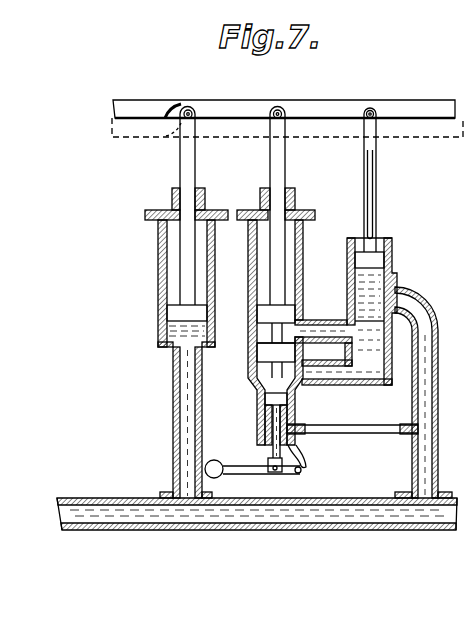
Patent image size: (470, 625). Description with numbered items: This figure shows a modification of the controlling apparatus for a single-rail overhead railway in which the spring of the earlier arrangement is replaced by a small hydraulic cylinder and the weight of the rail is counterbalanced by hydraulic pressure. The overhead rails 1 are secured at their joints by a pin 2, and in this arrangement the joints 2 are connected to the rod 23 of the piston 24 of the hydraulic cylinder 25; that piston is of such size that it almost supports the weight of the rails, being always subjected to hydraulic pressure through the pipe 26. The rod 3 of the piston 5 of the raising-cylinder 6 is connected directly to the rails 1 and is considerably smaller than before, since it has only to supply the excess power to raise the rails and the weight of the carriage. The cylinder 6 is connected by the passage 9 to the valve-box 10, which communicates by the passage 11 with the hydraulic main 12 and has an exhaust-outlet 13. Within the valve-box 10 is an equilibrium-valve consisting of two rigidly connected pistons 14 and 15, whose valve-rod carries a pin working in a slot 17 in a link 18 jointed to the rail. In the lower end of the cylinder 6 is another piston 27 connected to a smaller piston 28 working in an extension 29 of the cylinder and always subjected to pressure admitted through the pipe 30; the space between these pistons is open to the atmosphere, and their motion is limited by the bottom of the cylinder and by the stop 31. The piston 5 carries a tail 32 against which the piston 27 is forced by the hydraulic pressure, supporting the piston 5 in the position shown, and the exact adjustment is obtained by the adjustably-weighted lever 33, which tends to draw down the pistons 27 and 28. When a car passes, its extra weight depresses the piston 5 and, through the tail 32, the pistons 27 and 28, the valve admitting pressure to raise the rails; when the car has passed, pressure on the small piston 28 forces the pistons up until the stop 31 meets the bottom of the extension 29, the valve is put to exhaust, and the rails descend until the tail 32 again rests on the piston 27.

The overhead rail 1 is at (287, 118).
The pin 2 is at (191, 111).
The rod 3 is at (278, 181).
The piston 5 is at (266, 315).
The hydraulic cylinder 6 is at (260, 262).
The passage 9 is at (318, 335).
The valve-box 10 is at (353, 286).
The passage 11 is at (433, 381).
The hydraulic main 12 is at (320, 517).
The exhaust-outlet 13 is at (323, 372).
The piston 14 is at (378, 260).
The piston 15 is at (368, 332).
The slot 17 is at (374, 209).
The link 18 is at (377, 161).
The rod 23 is at (191, 164).
The piston 24 is at (178, 313).
The hydraulic cylinder 25 is at (163, 269).
The pipe 26 is at (181, 423).
The piston 27 is at (266, 352).
The piston 28 is at (286, 402).
The extension 29 is at (268, 422).
The pipe 30 is at (333, 434).
The stop 31 is at (263, 466).
The tail 32 is at (268, 337).
The adjustably-weighted lever 33 is at (248, 471).